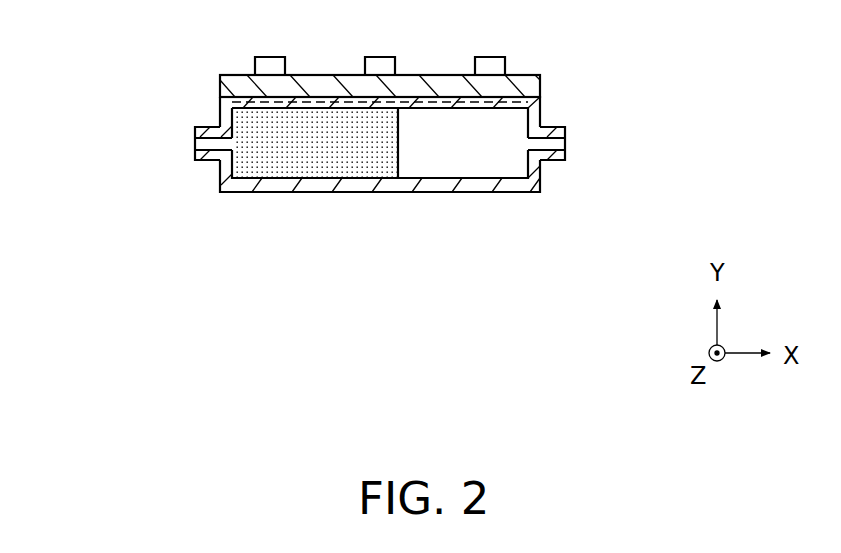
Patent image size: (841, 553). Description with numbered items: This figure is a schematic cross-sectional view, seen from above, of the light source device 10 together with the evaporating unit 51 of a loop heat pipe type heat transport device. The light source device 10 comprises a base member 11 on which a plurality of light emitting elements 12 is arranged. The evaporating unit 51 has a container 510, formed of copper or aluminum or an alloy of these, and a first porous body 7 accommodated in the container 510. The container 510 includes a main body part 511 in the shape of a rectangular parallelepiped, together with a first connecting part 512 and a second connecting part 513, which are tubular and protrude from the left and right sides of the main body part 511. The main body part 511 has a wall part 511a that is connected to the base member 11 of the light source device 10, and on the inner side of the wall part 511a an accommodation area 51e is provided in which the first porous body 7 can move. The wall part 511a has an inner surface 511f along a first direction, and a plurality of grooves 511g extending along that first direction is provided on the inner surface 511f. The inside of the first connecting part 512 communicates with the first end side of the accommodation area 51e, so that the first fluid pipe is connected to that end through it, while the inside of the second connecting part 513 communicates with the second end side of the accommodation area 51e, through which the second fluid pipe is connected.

The evaporating unit 51 is at (186, 167).
The main body part 511 is at (345, 184).
The wall part 511a is at (356, 100).
The inner surface 511f is at (257, 113).
The grooves 511g is at (434, 117).
The second connecting part 513 is at (207, 132).
The first connecting part 512 is at (548, 158).
The first porous body 7 is at (275, 165).
The container 510 is at (395, 197).
The accommodation area 51e is at (468, 163).
The light source device 10 is at (615, 32).
The base member 11 is at (533, 86).
The light emitting elements 12 is at (494, 60).